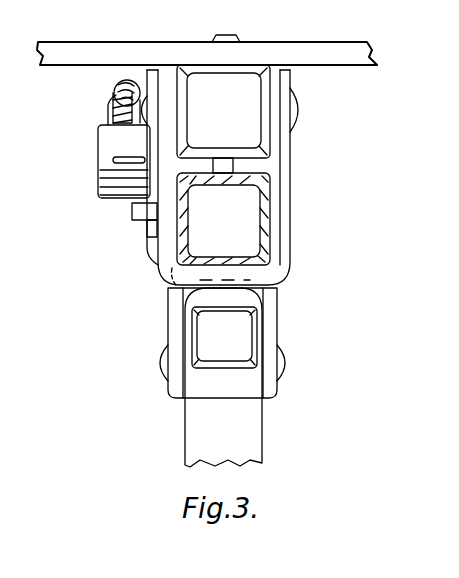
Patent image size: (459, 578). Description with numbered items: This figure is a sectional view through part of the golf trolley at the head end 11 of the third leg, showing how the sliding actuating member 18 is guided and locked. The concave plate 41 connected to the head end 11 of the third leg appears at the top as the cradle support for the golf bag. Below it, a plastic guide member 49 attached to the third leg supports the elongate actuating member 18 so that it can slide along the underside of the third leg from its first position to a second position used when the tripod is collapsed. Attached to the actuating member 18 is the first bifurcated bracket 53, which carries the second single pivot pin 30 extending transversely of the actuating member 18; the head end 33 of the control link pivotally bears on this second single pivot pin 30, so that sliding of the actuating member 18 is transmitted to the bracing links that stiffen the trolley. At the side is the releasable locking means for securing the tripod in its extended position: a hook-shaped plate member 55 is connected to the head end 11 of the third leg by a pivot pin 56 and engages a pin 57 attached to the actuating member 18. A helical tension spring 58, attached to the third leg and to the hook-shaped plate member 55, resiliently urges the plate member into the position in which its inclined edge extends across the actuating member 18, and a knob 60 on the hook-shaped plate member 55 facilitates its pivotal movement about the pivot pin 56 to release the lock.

The concave plate 41 is at (322, 50).
The guide member 49 is at (283, 207).
The head end of the third leg 11 is at (245, 118).
The actuating member 18 is at (265, 226).
The first bifurcated bracket 53 is at (175, 309).
The head end of the control link 33 is at (210, 407).
The second single pivot pin 30 is at (285, 355).
The pivot pin 56 is at (127, 80).
The helical tension spring 58 is at (112, 115).
The knob 60 is at (108, 150).
The hook-shaped plate member 55 is at (150, 178).
The pin 57 is at (133, 210).